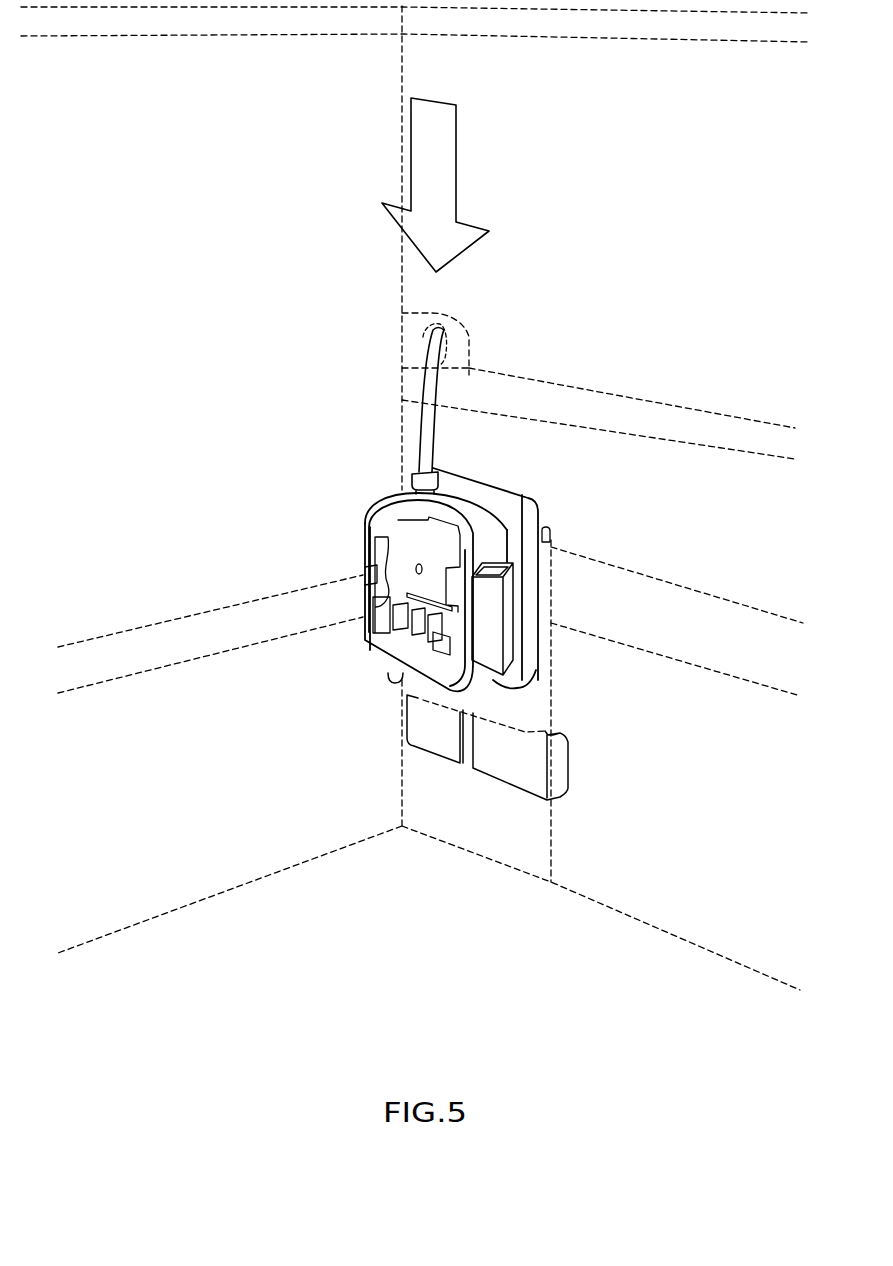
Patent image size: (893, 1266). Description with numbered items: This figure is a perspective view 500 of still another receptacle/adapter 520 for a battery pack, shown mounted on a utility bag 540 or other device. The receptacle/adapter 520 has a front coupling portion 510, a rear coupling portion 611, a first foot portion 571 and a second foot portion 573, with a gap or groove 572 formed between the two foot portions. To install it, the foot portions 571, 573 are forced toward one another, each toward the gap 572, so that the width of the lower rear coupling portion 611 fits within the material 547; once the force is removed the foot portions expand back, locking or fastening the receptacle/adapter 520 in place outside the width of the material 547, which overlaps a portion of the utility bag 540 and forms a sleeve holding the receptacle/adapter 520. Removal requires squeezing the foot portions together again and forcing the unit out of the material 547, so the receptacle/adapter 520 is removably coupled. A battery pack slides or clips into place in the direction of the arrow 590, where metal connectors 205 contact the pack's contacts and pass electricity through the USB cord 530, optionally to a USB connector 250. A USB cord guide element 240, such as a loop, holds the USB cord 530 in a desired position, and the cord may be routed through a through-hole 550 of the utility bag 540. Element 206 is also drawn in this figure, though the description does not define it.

The perspective view 500 is at (641, 176).
The arrow 590 is at (418, 155).
The through-hole 550 is at (432, 333).
The USB cord 530 is at (427, 420).
The USB cord guide element 240 is at (411, 477).
The front coupling portion 510 is at (522, 515).
The receptacle/adapter 520 is at (362, 530).
The rear coupling portion 611 is at (550, 532).
The latch 206 is at (365, 597).
The USB connector 250 is at (497, 618).
The metal connectors 205 is at (407, 617).
The material 547 is at (545, 657).
The second foot portion 573 is at (428, 730).
The gap or groove 572 is at (463, 763).
The first foot portion 571 is at (515, 765).
The utility bag 540 is at (580, 847).